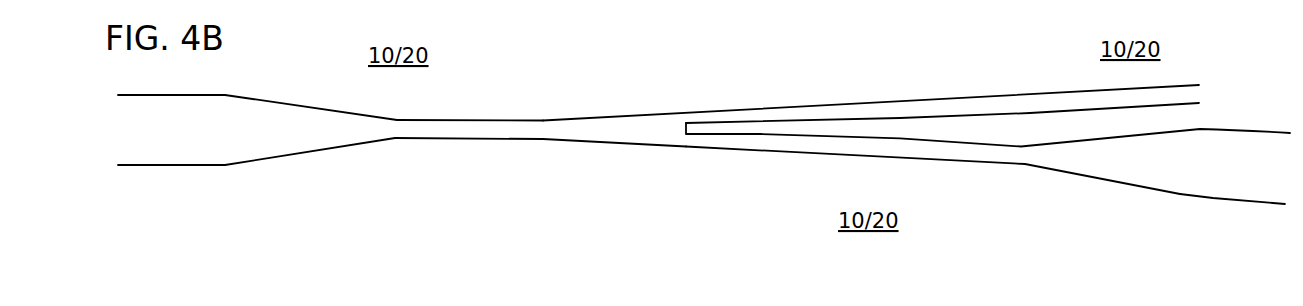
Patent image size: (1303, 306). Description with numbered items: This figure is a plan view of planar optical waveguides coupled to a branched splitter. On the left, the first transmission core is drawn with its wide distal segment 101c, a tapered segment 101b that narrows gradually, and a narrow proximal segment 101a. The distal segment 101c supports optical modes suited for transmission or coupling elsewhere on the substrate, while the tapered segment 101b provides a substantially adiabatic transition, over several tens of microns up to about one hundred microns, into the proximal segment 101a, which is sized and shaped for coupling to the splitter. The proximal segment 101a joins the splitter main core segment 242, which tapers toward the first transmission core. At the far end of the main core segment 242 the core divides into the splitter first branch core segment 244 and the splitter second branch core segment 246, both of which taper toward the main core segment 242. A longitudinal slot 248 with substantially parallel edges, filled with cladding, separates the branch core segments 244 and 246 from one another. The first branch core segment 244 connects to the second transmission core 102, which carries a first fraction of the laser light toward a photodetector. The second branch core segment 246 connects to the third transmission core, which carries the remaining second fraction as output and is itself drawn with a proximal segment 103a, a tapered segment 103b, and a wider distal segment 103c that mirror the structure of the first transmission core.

The proximal segment of first transmission core 101a is at (430, 130).
The tapered segment of first transmission core 101b is at (277, 140).
The distal segment of first transmission core 101c is at (165, 150).
The second transmission core 102 is at (1025, 104).
The proximal segment of third transmission core 103a is at (953, 152).
The tapered segment of third transmission core 103b is at (1133, 168).
The distal segment of third transmission core 103c is at (1218, 177).
The splitter main core segment 242 is at (607, 129).
The splitter first branch core segment 244 is at (768, 117).
The splitter second branch core segment 246 is at (747, 139).
The longitudinal slot 248 is at (744, 128).